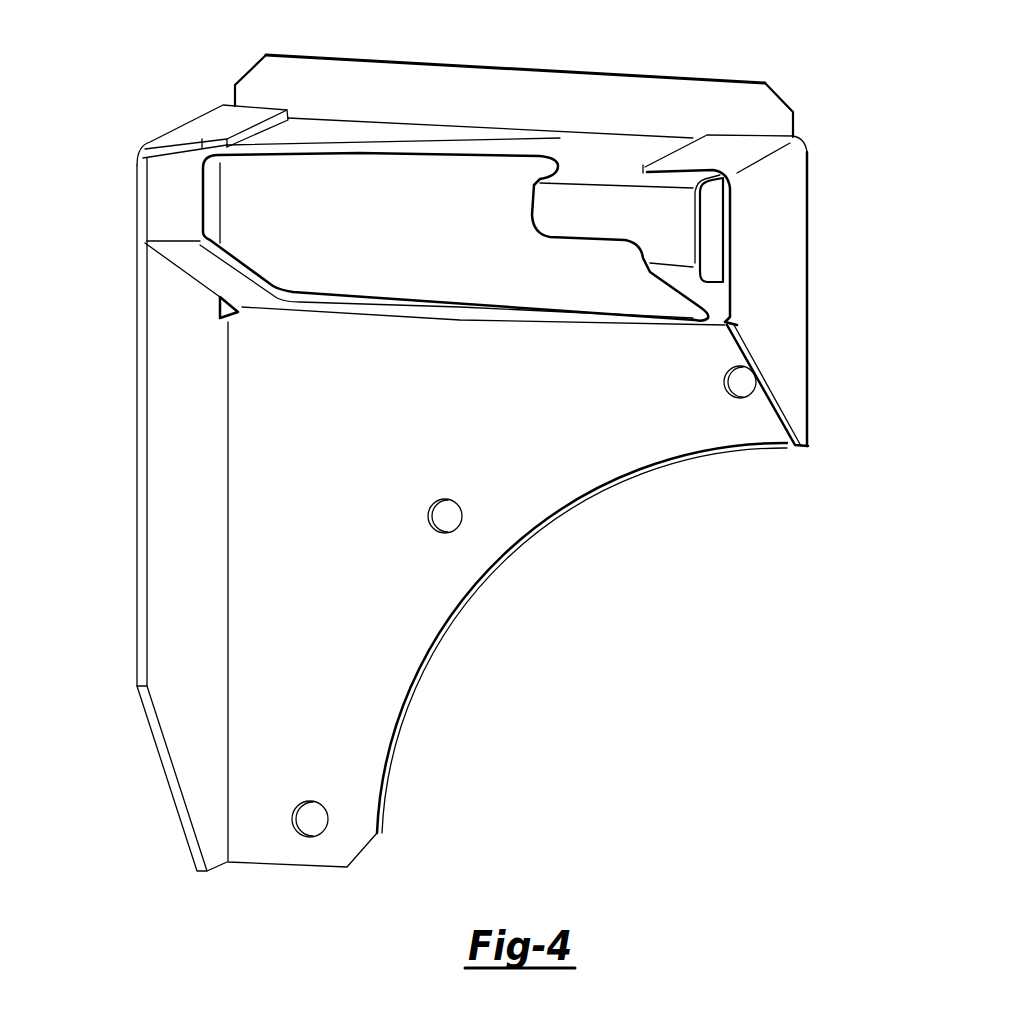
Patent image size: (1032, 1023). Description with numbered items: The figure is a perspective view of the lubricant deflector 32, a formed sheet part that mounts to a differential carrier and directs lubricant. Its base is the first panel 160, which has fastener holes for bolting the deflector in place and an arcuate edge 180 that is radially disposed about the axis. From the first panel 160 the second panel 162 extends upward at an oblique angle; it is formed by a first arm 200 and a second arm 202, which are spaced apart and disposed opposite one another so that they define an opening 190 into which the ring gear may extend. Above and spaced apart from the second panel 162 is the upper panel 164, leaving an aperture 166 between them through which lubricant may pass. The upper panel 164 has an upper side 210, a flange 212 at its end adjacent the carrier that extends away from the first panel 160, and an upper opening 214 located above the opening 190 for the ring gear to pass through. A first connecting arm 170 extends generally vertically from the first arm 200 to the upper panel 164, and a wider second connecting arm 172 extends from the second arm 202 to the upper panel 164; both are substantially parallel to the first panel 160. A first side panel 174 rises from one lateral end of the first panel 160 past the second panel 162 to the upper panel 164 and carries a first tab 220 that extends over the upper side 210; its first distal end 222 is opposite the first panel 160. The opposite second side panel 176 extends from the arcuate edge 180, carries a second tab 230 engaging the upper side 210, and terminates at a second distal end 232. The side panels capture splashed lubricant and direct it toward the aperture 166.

The lubricant deflector 32 is at (473, 436).
The first panel 160 is at (493, 510).
The second panel 162 is at (528, 325).
The upper panel 164 is at (510, 96).
The aperture 166 is at (454, 237).
The first connecting arm 170 is at (151, 514).
The second connecting arm 172 is at (631, 224).
The first side panel 174 is at (137, 617).
The second side panel 176 is at (762, 280).
The arcuate edge 180 is at (485, 578).
The opening 190 is at (398, 273).
The first arm 200 is at (248, 262).
The second arm 202 is at (653, 280).
The upper side 210 is at (510, 106).
The flange 212 is at (461, 108).
The upper opening 214 is at (388, 178).
The first tab 220 is at (185, 133).
The first distal end 222 is at (147, 413).
The second tab 230 is at (750, 148).
The second distal end 232 is at (725, 293).